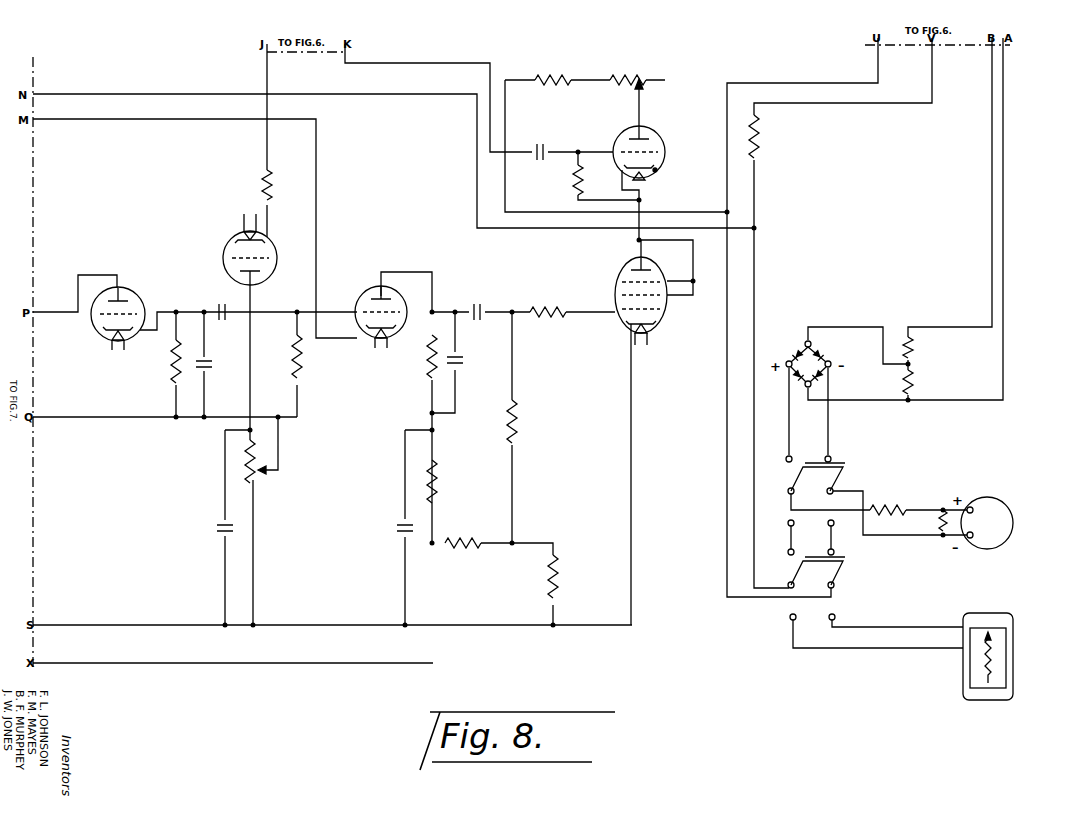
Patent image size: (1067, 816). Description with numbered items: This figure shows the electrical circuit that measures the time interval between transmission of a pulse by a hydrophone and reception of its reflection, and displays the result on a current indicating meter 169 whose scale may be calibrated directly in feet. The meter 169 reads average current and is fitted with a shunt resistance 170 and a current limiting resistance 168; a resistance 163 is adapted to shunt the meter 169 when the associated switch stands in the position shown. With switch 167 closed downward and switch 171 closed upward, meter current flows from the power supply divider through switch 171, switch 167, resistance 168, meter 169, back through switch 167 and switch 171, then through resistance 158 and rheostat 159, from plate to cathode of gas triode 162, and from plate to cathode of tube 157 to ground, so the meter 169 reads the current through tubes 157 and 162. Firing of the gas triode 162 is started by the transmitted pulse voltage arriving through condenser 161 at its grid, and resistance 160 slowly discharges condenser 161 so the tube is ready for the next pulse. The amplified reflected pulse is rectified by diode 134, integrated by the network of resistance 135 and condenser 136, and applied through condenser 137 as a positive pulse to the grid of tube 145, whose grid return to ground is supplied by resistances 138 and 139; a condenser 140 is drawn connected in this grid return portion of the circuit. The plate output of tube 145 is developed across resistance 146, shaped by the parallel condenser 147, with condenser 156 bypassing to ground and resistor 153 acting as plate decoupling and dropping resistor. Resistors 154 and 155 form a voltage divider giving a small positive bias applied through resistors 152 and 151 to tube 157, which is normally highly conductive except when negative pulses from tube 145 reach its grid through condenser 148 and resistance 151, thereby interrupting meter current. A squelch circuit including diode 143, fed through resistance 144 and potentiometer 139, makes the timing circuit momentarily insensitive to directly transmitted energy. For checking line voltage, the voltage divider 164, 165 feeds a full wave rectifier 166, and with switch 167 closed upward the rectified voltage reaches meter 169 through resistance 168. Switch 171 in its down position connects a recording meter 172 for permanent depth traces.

The diode 134 is at (138, 297).
The resistance 135 is at (171, 367).
The condenser 136 is at (206, 370).
The condenser 137 is at (221, 305).
The resistance 138 is at (303, 361).
The potentiometer 139 is at (258, 478).
The capacitor 140 is at (220, 526).
The diode 143 is at (276, 259).
The resistance 144 is at (272, 187).
The tube 145 is at (361, 292).
The resistance 146 is at (428, 362).
The condenser 147 is at (460, 363).
The condenser 148 is at (484, 302).
The resistance 151 is at (545, 302).
The resistor 152 is at (520, 420).
The resistor 153 is at (443, 475).
The resistor 154 is at (470, 536).
The resistor 155 is at (561, 573).
The condenser 156 is at (401, 525).
The tube 157 is at (613, 286).
The resistance 158 is at (556, 72).
The rheostat 159 is at (638, 72).
The resistance 160 is at (575, 185).
The condenser 161 is at (544, 148).
The gas triode 162 is at (659, 136).
The resistance 163 is at (759, 140).
The voltage divider resistance 164 is at (913, 347).
The voltage divider resistance 165 is at (913, 382).
The full wave rectifier 166 is at (820, 348).
The switch 167 is at (843, 475).
The current limiting resistance 168 is at (893, 506).
The current indicating meter 169 is at (1005, 506).
The shunt resistance 170 is at (940, 530).
The switch 171 is at (844, 574).
The recording meter 172 is at (1014, 640).